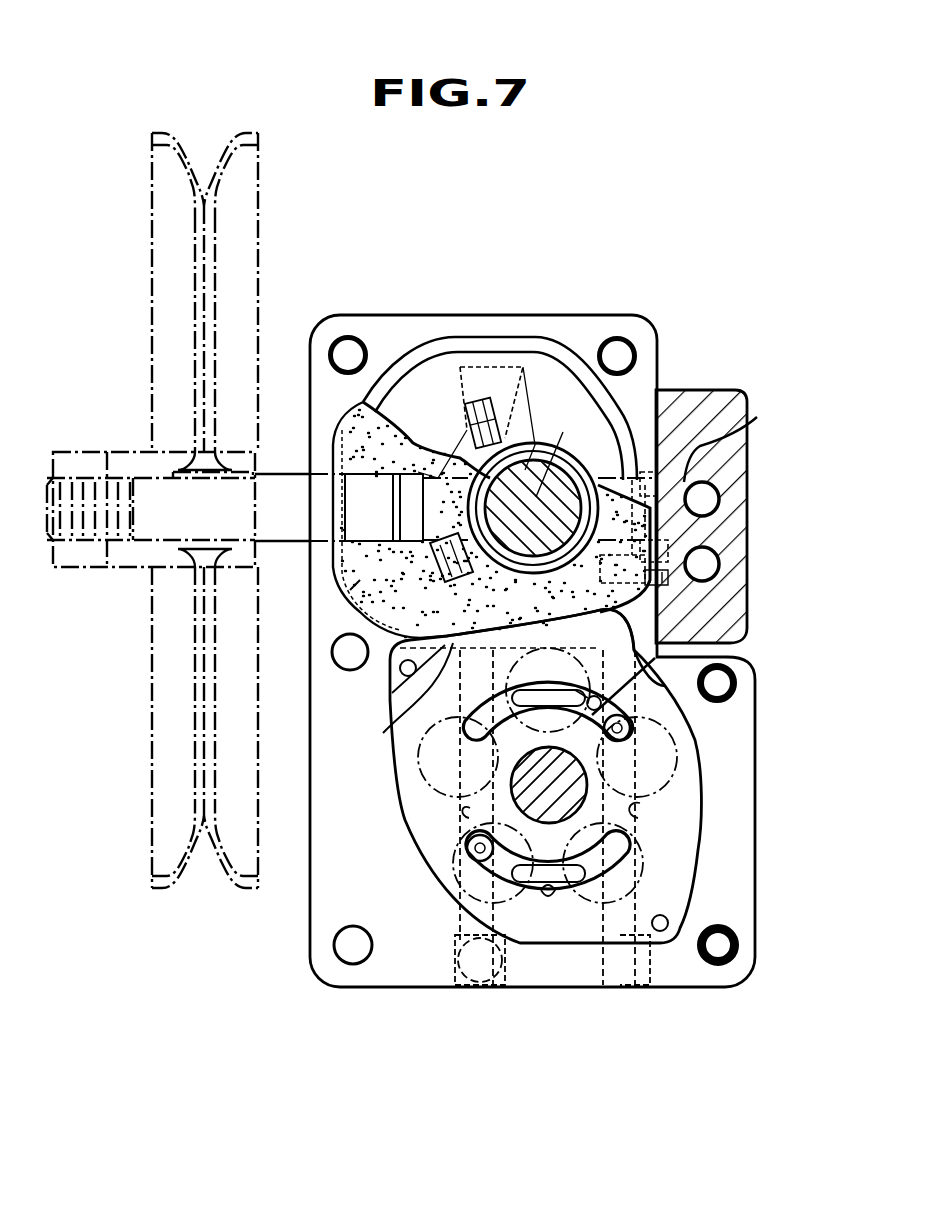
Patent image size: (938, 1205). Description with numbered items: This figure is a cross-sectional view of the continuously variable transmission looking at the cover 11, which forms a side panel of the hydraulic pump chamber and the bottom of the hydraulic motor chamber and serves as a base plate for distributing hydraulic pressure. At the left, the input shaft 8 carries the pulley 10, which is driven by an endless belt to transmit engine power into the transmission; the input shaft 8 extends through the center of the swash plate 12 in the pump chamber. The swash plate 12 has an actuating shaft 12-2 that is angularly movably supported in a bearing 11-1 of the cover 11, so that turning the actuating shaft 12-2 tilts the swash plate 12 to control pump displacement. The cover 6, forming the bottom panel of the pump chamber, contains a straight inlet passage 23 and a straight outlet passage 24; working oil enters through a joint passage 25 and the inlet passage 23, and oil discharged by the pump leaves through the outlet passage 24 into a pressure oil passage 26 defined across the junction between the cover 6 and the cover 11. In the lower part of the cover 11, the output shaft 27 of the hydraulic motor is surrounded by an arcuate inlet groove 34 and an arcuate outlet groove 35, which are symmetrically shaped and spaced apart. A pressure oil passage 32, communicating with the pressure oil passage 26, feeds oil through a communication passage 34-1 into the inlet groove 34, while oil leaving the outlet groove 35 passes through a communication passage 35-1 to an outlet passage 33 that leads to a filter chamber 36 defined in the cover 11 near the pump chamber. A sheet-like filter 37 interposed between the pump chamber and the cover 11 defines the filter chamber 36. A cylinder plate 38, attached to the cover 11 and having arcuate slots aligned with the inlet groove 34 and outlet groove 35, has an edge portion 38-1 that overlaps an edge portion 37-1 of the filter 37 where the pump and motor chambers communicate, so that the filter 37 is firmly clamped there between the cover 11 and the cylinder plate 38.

The cover 6 is at (722, 392).
The input shaft 8 is at (300, 545).
The pulley 10 is at (186, 890).
The cover 11 is at (410, 305).
The bearing 11-1 is at (533, 440).
The swash plate 12 is at (474, 336).
The actuating shaft 12-2 is at (580, 358).
The inlet passage 23 is at (703, 502).
The outlet passage 24 is at (703, 566).
The joint passage 25 is at (760, 413).
The pressure oil passage 26 is at (668, 576).
The output shaft 27 is at (560, 800).
The pressure oil passage 32 is at (643, 805).
The outlet passage 33 is at (463, 812).
The inlet groove 34 is at (748, 662).
The communication passage 34-1 is at (630, 730).
The outlet groove 35 is at (548, 898).
The communication passage 35-1 is at (470, 870).
The filter chamber 36 is at (590, 434).
The filter 37 is at (350, 590).
The edge portion 37-1 is at (383, 735).
The cylinder plate 38 is at (677, 880).
The edge portion 38-1 is at (392, 693).